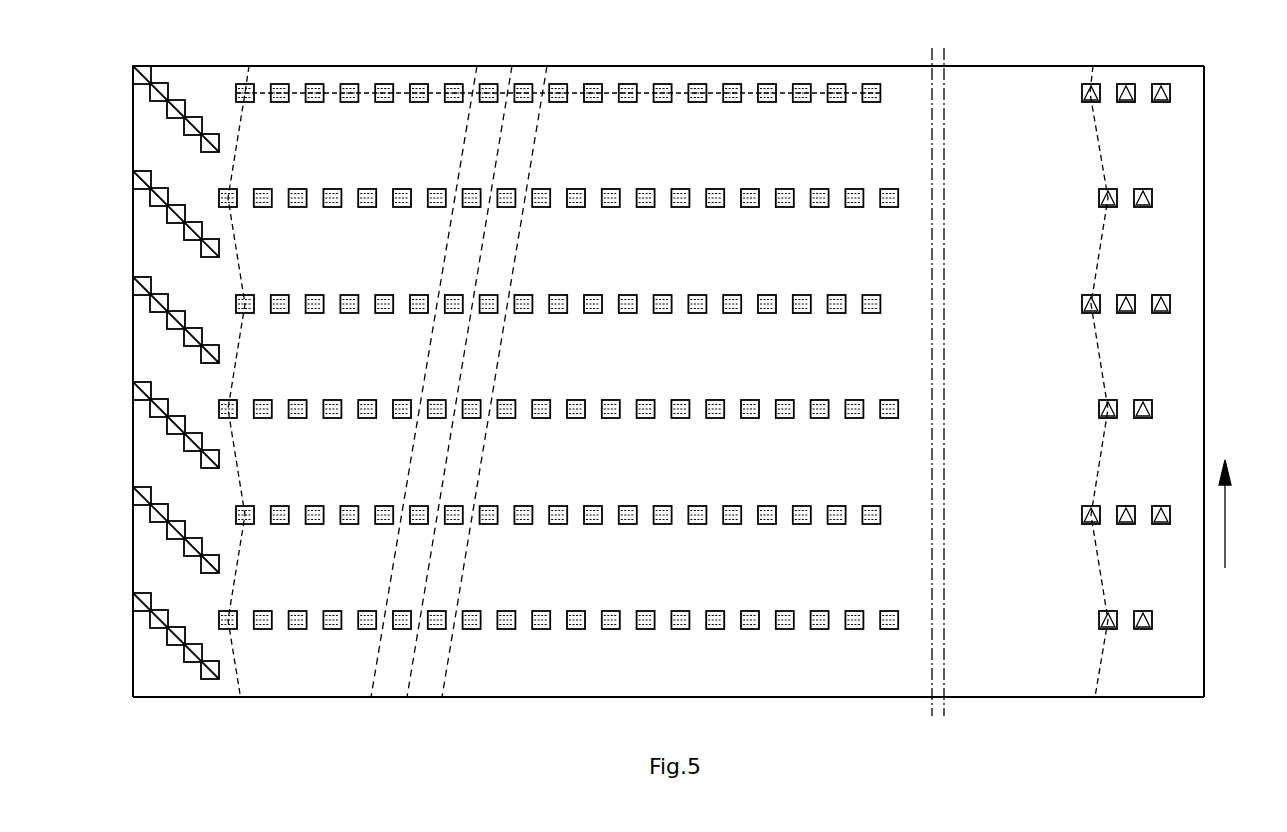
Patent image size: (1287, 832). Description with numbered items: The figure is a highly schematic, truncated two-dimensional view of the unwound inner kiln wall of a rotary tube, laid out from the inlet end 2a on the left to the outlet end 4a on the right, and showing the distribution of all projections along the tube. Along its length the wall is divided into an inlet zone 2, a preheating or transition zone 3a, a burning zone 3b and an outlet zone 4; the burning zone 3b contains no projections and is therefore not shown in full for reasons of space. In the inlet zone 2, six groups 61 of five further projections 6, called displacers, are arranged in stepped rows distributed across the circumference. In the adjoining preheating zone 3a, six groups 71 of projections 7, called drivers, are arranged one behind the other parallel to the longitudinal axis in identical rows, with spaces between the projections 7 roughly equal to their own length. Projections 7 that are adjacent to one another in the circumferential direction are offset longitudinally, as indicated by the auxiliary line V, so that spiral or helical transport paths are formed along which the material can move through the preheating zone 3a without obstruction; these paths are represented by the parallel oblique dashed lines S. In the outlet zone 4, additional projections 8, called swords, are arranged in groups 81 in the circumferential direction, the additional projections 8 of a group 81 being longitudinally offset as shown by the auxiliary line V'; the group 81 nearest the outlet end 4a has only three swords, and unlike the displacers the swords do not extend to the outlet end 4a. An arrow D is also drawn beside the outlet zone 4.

The inlet zone 2 is at (218, 53).
The inlet end 2a is at (112, 653).
The preheating zone 3a is at (898, 53).
The burning zone 3b is at (1048, 53).
The outlet zone 4 is at (1205, 53).
The outlet end 4a is at (1226, 655).
The further projections 6 is at (139, 78).
The groups of further projections 61 is at (203, 170).
The projections 7 is at (332, 188).
The groups of projections 71 is at (219, 428).
The additional projections 8 is at (1147, 188).
The groups of additional projections 81 is at (1073, 73).
The auxiliary line V is at (260, 381).
The auxiliary line V' is at (1125, 381).
The oblique dashed lines S is at (513, 262).
The direction arrow D is at (1226, 522).